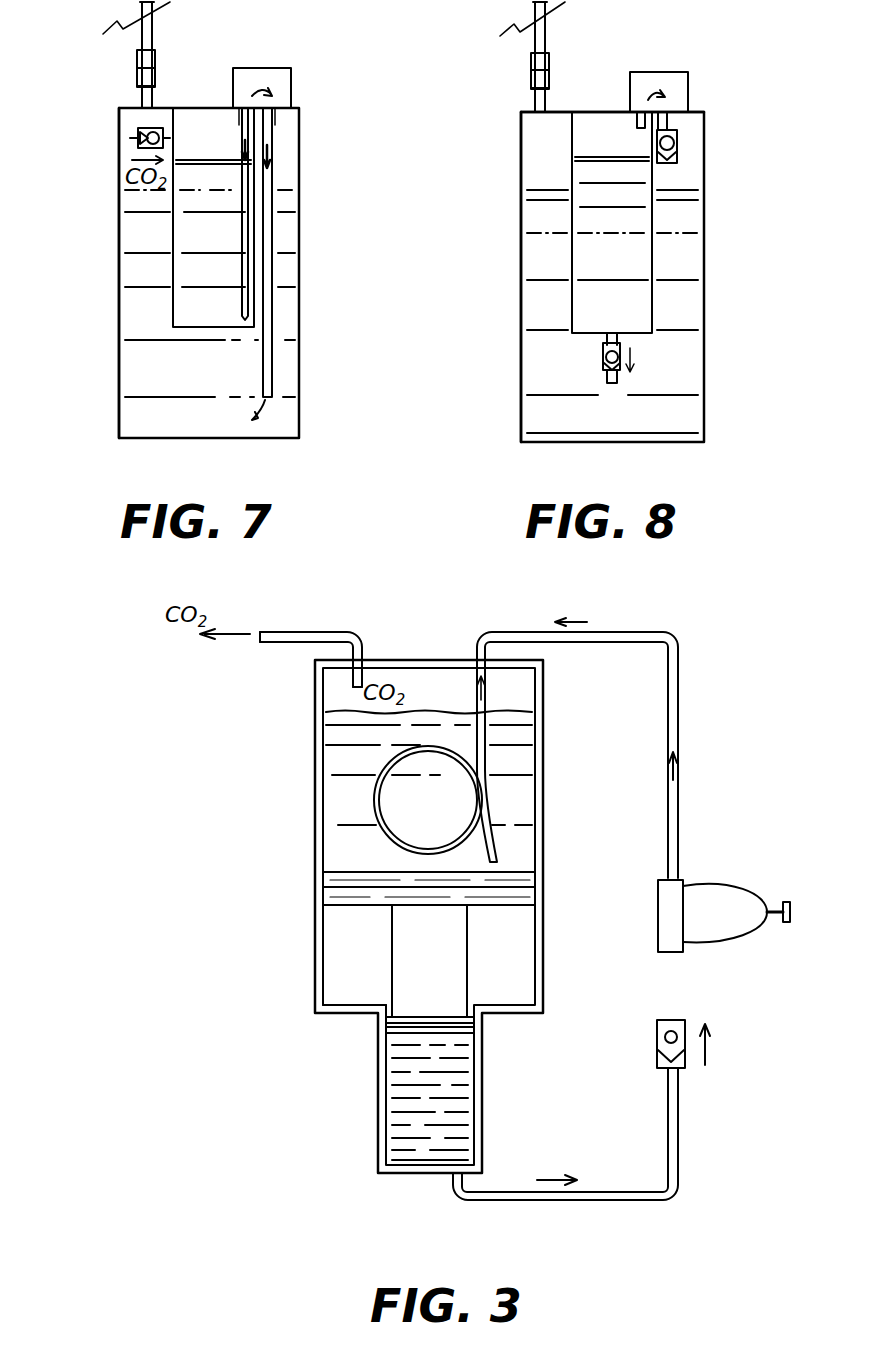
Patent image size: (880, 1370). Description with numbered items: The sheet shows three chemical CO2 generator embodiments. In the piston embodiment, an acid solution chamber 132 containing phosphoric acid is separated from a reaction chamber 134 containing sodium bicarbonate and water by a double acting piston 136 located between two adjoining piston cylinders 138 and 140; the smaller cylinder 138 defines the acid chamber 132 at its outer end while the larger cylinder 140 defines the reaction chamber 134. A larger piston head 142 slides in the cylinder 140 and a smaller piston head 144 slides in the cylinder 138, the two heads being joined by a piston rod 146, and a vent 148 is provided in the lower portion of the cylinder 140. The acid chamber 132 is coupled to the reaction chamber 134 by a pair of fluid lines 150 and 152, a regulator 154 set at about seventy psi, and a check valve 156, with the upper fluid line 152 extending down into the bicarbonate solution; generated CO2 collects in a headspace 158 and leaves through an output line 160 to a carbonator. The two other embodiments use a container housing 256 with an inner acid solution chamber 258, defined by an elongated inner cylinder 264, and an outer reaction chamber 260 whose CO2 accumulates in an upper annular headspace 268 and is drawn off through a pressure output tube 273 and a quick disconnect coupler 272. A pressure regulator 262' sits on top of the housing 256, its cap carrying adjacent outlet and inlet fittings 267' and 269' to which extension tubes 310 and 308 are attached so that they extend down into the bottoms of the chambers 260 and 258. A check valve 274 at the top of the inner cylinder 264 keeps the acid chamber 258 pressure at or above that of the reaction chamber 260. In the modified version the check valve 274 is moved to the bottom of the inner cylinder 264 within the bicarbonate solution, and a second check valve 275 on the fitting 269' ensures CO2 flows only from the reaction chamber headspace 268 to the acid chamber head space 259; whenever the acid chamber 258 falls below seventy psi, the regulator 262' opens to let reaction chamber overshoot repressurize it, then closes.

In FIG. 3, the acid solution chamber 132 is at (462, 1128).
In FIG. 3, the reaction chamber 134 is at (520, 765).
In FIG. 3, the double acting piston 136 is at (529, 945).
In FIG. 3, the piston cylinder 138 is at (380, 1118).
In FIG. 3, the piston cylinder 140 is at (543, 702).
In FIG. 3, the piston head 142 is at (533, 892).
In FIG. 3, the piston head 144 is at (405, 1032).
In FIG. 3, the piston rod 146 is at (455, 971).
In FIG. 3, the vent 148 is at (345, 1003).
In FIG. 3, the fluid line 150 is at (610, 1190).
In FIG. 3, the fluid line 152 is at (675, 732).
In FIG. 3, the regulator 154 is at (713, 893).
In FIG. 3, the check valve 156 is at (657, 1050).
In FIG. 3, the headspace 158 is at (414, 680).
In FIG. 3, the output line 160 is at (301, 633).
In FIG. 7, the container housing 256 is at (299, 356).
In FIG. 8, the container housing 256 is at (704, 320).
In FIG. 7, the acid solution chamber 258 is at (187, 118).
In FIG. 8, the acid solution chamber 258 is at (588, 248).
In FIG. 8, the acid chamber head space 259 is at (580, 125).
In FIG. 7, the reaction chamber 260 is at (288, 410).
In FIG. 8, the reaction chamber 260 is at (690, 412).
In FIG. 7, the pressure regulator 262' is at (290, 56).
In FIG. 8, the pressure regulator 262' is at (702, 84).
In FIG. 7, the inner cylinder 264 is at (172, 300).
In FIG. 8, the inner cylinder 264 is at (570, 300).
In FIG. 7, the outlet fitting 267' is at (325, 98).
In FIG. 8, the outlet fitting 267' is at (670, 69).
In FIG. 7, the headspace 268 is at (290, 162).
In FIG. 8, the headspace 268 is at (555, 140).
In FIG. 7, the inlet fitting 269' is at (219, 79).
In FIG. 8, the inlet fitting 269' is at (717, 121).
In FIG. 7, the quick disconnect coupler 272 is at (152, 60).
In FIG. 8, the quick disconnect coupler 272 is at (548, 62).
In FIG. 7, the pressure output tube 273 is at (140, 106).
In FIG. 8, the pressure output tube 273 is at (543, 108).
In FIG. 7, the check valve 274 is at (138, 135).
In FIG. 8, the check valve 274 is at (600, 358).
In FIG. 8, the check valve 275 is at (675, 148).
In FIG. 7, the extension tube 308 is at (247, 248).
In FIG. 7, the extension tube 310 is at (272, 282).